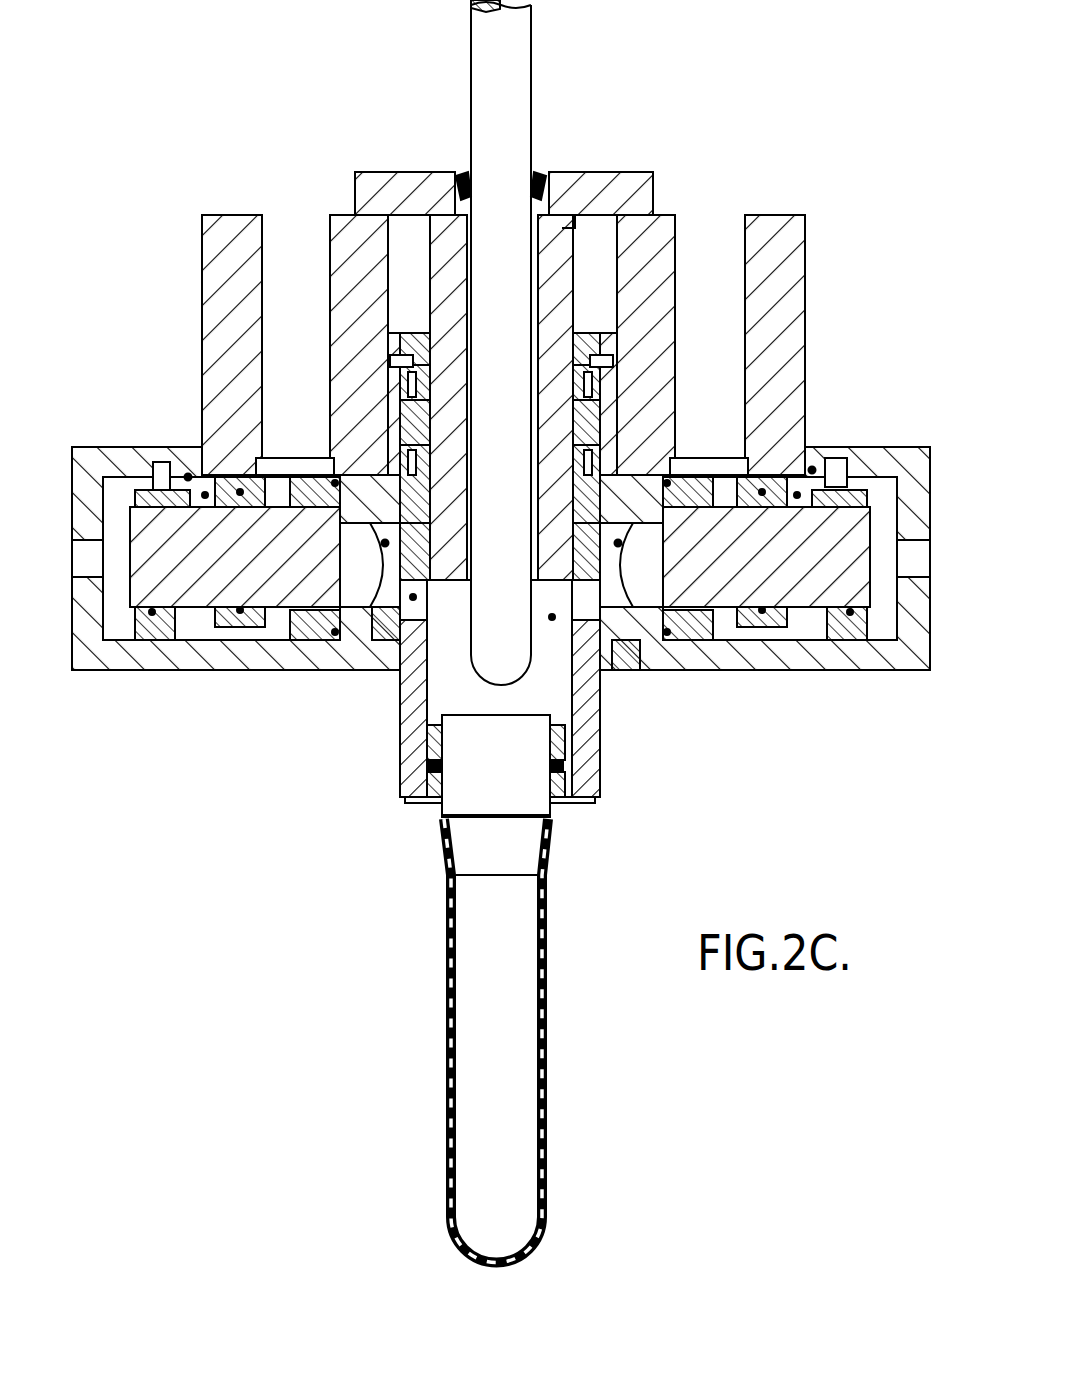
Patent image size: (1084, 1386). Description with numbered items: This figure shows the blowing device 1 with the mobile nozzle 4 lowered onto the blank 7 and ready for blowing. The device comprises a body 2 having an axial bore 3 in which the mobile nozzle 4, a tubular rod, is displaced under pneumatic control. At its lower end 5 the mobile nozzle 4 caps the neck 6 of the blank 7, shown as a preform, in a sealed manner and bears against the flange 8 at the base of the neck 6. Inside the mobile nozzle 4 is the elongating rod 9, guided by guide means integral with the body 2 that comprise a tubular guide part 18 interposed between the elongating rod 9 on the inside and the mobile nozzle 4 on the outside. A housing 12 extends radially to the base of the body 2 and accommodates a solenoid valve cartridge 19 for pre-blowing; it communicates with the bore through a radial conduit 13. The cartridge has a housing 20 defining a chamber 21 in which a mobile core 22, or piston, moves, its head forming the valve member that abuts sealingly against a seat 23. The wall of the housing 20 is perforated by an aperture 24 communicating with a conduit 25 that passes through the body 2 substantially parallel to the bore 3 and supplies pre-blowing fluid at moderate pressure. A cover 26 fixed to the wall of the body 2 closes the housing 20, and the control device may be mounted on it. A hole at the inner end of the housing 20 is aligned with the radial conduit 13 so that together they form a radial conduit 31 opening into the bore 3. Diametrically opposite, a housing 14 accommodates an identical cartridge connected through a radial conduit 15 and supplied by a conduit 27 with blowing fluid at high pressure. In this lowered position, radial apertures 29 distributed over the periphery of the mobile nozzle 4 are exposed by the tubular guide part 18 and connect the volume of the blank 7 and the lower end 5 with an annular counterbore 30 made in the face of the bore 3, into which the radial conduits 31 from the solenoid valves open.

The blowing device 1 is at (553, 279).
The body 2 is at (807, 357).
The axial bore 3 is at (627, 308).
The mobile nozzle 4 is at (413, 745).
The lower end 5 is at (582, 767).
The neck 6 is at (405, 775).
The blank 7 is at (551, 912).
The flange 8 is at (418, 800).
The elongating rod 9 is at (543, 75).
The housing 12 is at (215, 640).
The radial conduit 13 is at (392, 618).
The housing 14 is at (782, 672).
The radial conduit 15 is at (625, 670).
The tubular guide part 18 is at (448, 283).
The solenoid valve cartridge 19 is at (167, 640).
The housing 20 is at (188, 477).
The chamber 21 is at (172, 645).
The mobile core 22 is at (158, 548).
The seat 23 is at (343, 637).
The aperture 24 is at (293, 483).
The conduit 25 is at (293, 240).
The cover 26 is at (98, 655).
The conduit 27 is at (722, 256).
The radial apertures 29 is at (413, 597).
The annular counterbore 30 is at (393, 630).
The radial conduit 31 is at (650, 555).